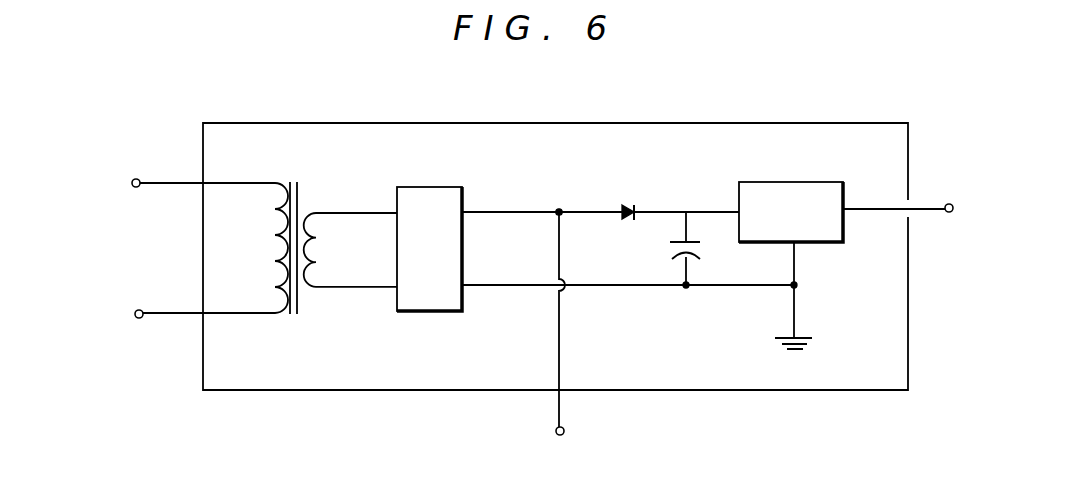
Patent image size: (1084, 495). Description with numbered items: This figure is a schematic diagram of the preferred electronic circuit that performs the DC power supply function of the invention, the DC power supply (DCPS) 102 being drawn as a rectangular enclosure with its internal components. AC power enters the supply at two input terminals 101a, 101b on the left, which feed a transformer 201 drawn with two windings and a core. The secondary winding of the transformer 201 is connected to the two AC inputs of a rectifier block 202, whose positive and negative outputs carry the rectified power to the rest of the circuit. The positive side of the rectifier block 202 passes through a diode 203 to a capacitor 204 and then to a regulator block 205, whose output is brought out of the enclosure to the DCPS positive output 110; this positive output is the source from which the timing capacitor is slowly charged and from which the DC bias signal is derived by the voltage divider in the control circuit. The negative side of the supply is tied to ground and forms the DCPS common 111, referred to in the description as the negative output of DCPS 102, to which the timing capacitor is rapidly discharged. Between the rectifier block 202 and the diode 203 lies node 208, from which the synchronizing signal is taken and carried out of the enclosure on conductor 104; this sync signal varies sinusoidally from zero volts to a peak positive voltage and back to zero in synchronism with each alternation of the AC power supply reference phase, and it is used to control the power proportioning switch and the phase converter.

The DC power supply 102 is at (323, 122).
The AC input terminal 101a is at (131, 180).
The AC input terminal 101b is at (134, 311).
The transformer 201 is at (302, 182).
The rectifier u1 202 is at (448, 187).
The diode 203 is at (629, 204).
The smoothing capacitor 204 is at (672, 252).
The voltage regulator u2 205 is at (792, 182).
The node 208 is at (556, 216).
The DCPS positive output 110 is at (951, 203).
The DCPS common 111 is at (808, 338).
The conductor 104 is at (564, 435).